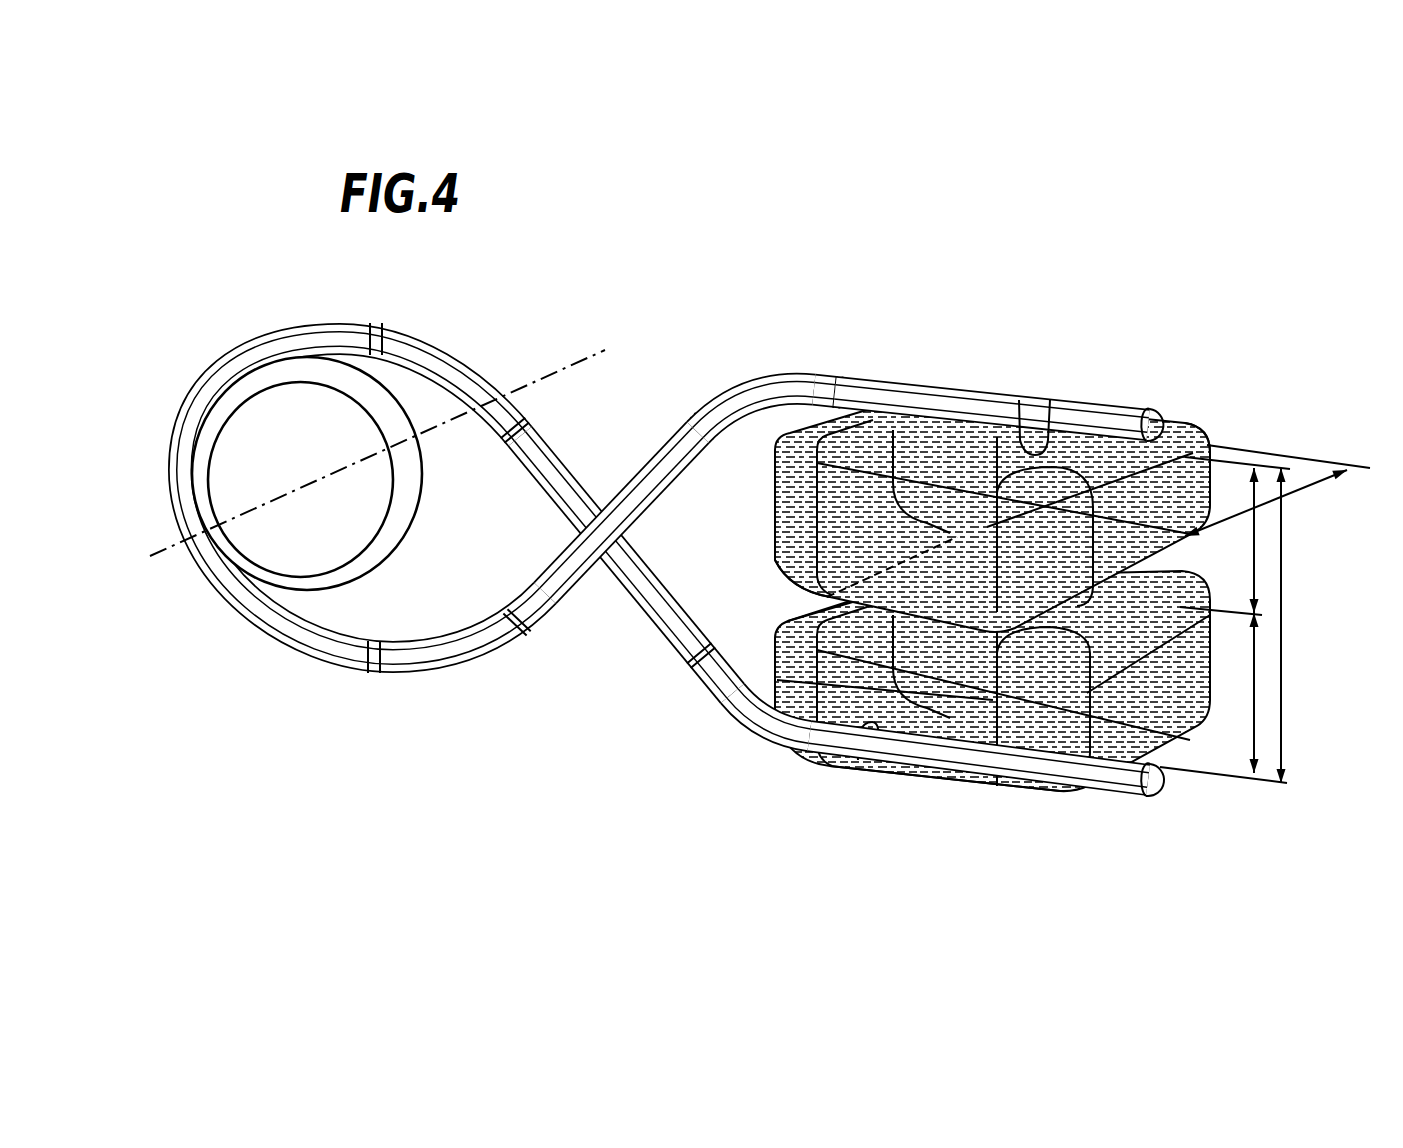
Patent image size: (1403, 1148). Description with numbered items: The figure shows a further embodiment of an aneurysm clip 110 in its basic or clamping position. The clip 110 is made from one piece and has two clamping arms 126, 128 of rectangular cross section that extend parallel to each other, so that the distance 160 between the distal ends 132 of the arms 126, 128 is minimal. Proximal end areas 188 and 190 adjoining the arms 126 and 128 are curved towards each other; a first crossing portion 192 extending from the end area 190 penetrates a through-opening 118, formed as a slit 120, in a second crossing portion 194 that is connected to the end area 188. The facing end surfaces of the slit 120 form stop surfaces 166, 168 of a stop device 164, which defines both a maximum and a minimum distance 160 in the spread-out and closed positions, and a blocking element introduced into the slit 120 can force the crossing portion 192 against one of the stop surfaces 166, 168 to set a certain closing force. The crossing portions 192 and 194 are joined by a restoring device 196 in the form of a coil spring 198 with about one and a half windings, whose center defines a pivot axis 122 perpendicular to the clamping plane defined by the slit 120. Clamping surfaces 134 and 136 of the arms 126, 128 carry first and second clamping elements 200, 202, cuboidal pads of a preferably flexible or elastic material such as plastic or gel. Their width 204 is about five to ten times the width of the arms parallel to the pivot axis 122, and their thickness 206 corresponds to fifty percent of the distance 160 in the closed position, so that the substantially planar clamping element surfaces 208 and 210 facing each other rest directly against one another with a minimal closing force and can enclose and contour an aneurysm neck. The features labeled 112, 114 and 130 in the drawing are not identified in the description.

The aneurysm clip 110 is at (667, 307).
The first pad 112 is at (903, 361).
The second pad 114 is at (754, 753).
The through-opening 118 is at (652, 462).
The slit 120 is at (627, 497).
The pivot axis 122 is at (556, 352).
The clamping arm 126 is at (977, 397).
The clamping arm 128 is at (1113, 790).
The upper wire end 130 is at (1167, 430).
The distal ends 132 is at (1168, 792).
The clamping surface 134 is at (1047, 430).
The clamping surface 136 is at (867, 735).
The distance 160 is at (1283, 633).
The stop device 164 is at (600, 584).
The stop surface 166 is at (697, 412).
The stop surface 168 is at (525, 638).
The proximal end area 188 is at (800, 376).
The proximal end area 190 is at (735, 700).
The first crossing portion 192 is at (667, 628).
The second crossing portion 194 is at (667, 490).
The restoring device 196 is at (194, 576).
The coil spring 198 is at (203, 402).
The first clamping element 200 is at (1212, 420).
The second clamping element 202 is at (949, 768).
The width 204 is at (1310, 486).
The thickness 206 is at (1265, 552).
The clamping element surface 208 is at (830, 599).
The clamping element surface 210 is at (860, 590).